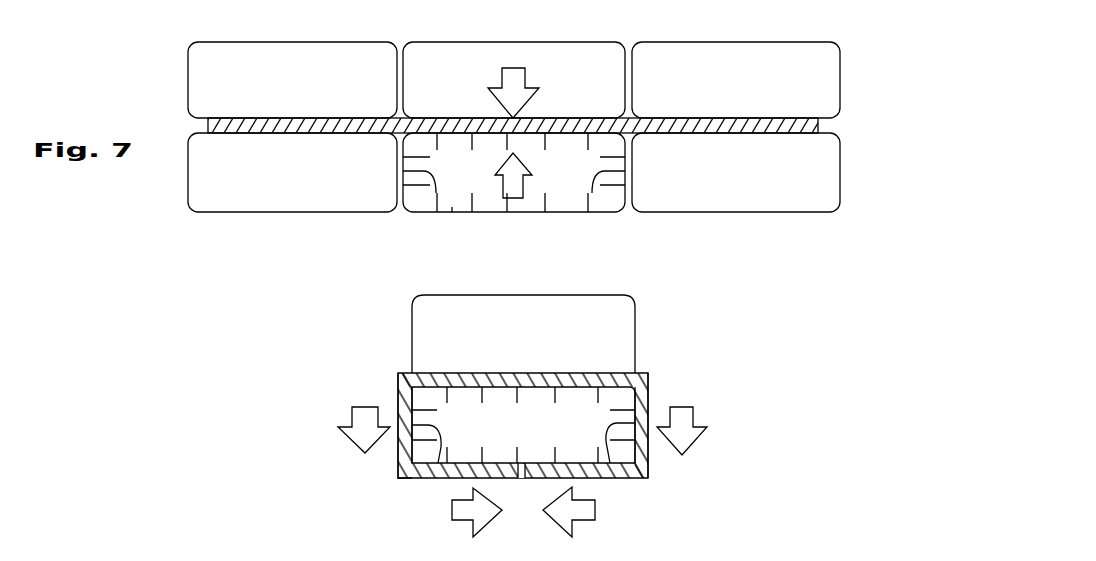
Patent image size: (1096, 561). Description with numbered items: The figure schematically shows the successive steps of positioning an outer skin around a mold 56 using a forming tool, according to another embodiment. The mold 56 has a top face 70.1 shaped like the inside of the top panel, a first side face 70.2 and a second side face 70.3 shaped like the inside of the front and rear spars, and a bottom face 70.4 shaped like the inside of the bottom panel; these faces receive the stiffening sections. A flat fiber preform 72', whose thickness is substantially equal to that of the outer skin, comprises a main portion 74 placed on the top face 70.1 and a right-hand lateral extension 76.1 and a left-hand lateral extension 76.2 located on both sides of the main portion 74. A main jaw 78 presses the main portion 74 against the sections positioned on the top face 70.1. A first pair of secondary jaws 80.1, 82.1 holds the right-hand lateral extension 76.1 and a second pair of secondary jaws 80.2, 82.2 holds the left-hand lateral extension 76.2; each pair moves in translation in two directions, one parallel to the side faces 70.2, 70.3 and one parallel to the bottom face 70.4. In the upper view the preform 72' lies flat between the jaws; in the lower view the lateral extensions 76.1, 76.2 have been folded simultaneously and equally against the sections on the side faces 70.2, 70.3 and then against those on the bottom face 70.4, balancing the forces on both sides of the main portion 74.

The mold 56 is at (453, 197).
The top face 70.1 is at (480, 137).
The first side face 70.2 is at (433, 193).
The second side face 70.3 is at (595, 180).
The bottom face 70.4 is at (577, 207).
The flat fiber preform 72' is at (549, 243).
The main portion 74 is at (558, 130).
The right-hand lateral extension 76.1 is at (263, 133).
The left-hand lateral extension 76.2 is at (802, 133).
The main jaw 78 is at (423, 93).
The secondary jaw 80.1 is at (231, 77).
The secondary jaw 80.2 is at (775, 95).
The secondary jaw 82.1 is at (203, 195).
The secondary jaw 82.2 is at (734, 179).